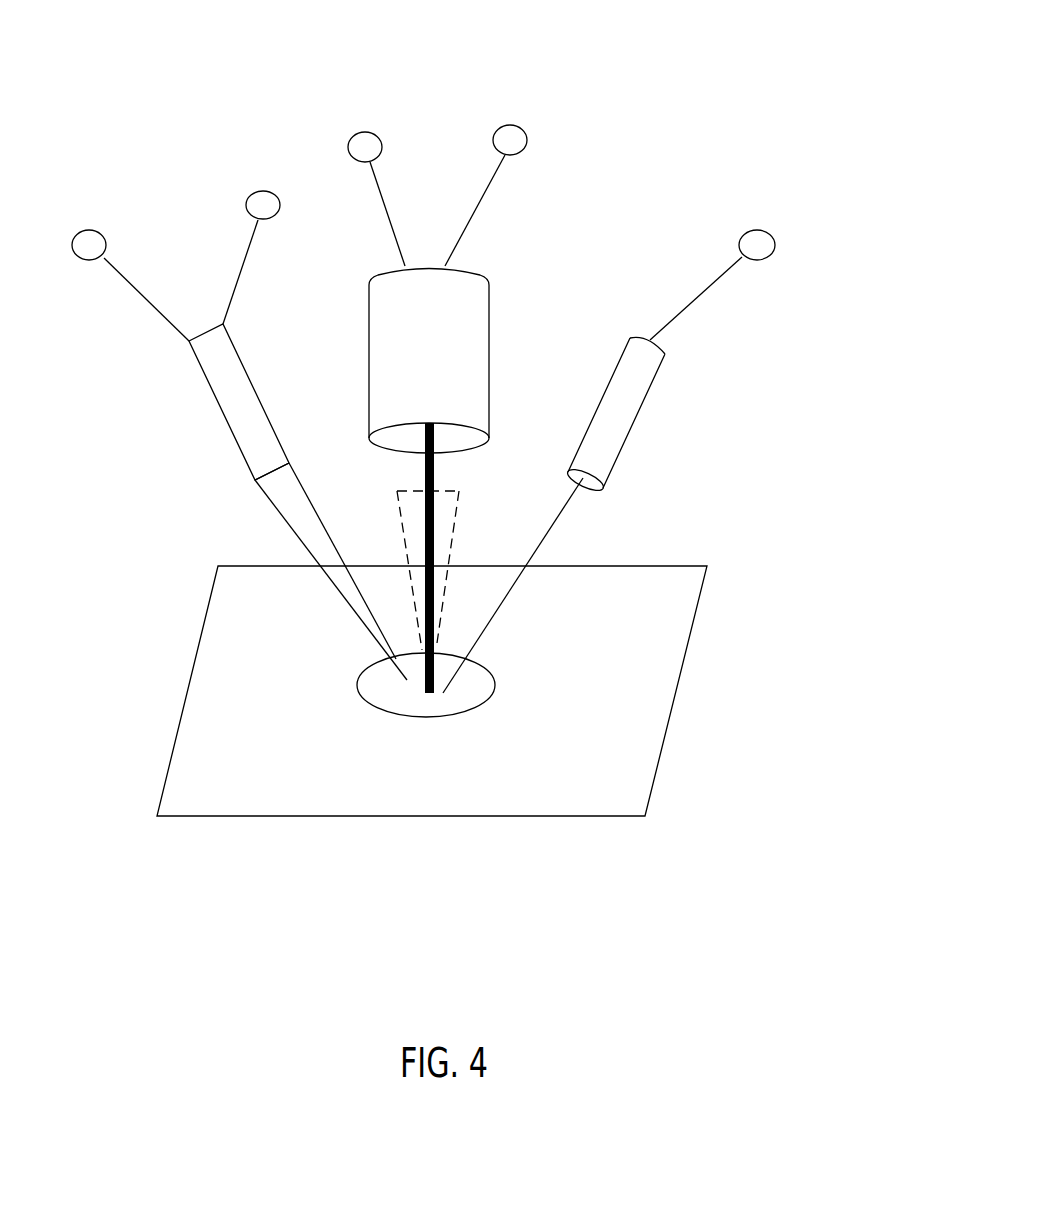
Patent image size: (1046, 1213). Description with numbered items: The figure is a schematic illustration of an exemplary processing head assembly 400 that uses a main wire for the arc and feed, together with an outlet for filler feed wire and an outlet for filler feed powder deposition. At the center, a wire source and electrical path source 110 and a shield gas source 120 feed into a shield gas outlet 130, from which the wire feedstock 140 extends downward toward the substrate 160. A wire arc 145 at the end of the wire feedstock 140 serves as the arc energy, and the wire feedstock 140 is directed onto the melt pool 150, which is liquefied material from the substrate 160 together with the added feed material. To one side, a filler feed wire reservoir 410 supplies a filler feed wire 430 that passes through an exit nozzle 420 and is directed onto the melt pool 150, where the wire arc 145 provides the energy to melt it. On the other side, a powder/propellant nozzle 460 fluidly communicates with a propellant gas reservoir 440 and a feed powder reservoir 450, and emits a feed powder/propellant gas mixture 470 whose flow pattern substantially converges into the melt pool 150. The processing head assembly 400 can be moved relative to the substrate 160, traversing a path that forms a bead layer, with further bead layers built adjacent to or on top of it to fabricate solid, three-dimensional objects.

The processing head assembly 400 is at (712, 72).
The wire source and electrical path source 110 is at (382, 138).
The shield gas source 120 is at (529, 140).
The shield gas outlet 130 is at (369, 360).
The wire feedstock 140 is at (435, 472).
The wire arc 145 is at (458, 512).
The melt pool 150 is at (463, 697).
The substrate 160 is at (687, 637).
The filler feed wire reservoir 410 is at (777, 243).
The exit nozzle 420 is at (647, 398).
The filler feed wire 430 is at (543, 545).
The propellant gas reservoir 440 is at (93, 225).
The feed powder reservoir 450 is at (247, 193).
The powder/propellant nozzle 460 is at (225, 417).
The feed powder/propellant gas mixture 470 is at (277, 510).